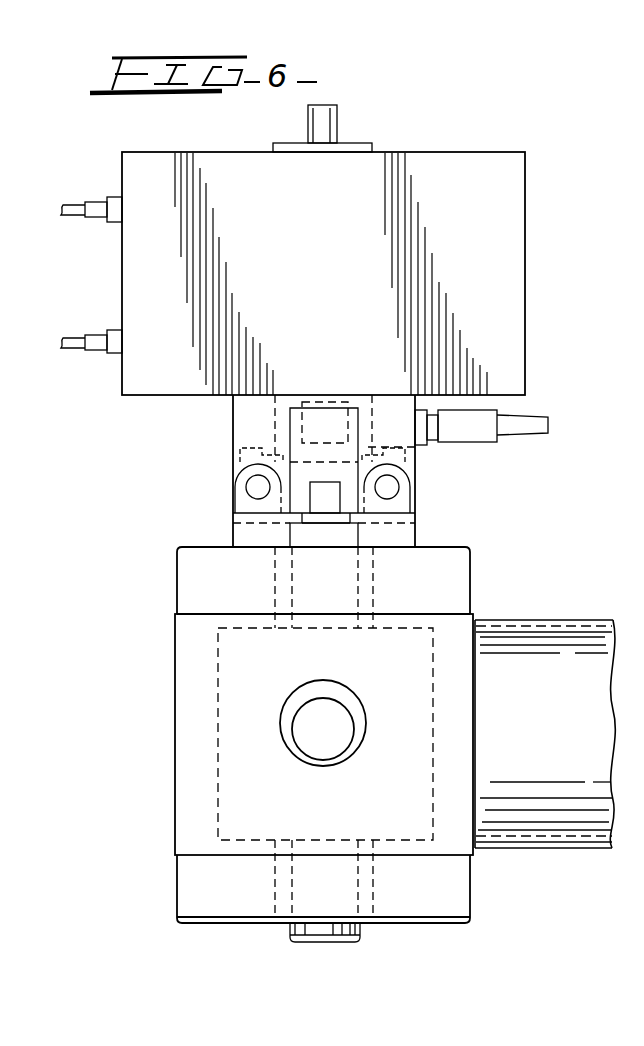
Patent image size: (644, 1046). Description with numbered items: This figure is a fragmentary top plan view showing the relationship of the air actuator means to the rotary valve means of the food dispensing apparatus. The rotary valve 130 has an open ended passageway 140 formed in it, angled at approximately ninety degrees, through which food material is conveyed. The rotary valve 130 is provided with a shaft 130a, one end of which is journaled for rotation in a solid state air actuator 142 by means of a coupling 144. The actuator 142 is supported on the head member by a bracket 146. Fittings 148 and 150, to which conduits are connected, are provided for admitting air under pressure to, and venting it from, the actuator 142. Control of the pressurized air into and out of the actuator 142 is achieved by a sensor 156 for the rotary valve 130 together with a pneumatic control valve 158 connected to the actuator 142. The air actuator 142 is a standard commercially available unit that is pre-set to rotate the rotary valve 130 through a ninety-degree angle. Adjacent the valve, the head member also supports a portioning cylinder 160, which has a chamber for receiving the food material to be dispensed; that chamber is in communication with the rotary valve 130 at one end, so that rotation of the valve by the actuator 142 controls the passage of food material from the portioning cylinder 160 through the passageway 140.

The rotary valve 130 is at (218, 712).
The shaft 130a is at (322, 498).
The open ended passageway 140 is at (304, 750).
The solid state air actuator 142 is at (527, 255).
The coupling 144 is at (290, 458).
The bracket 146 is at (417, 496).
The fitting 148 is at (112, 226).
The fitting 150 is at (112, 356).
The sensor 156 is at (63, 202).
The pneumatic control valve 158 is at (70, 332).
The portioning cylinder 160 is at (558, 620).